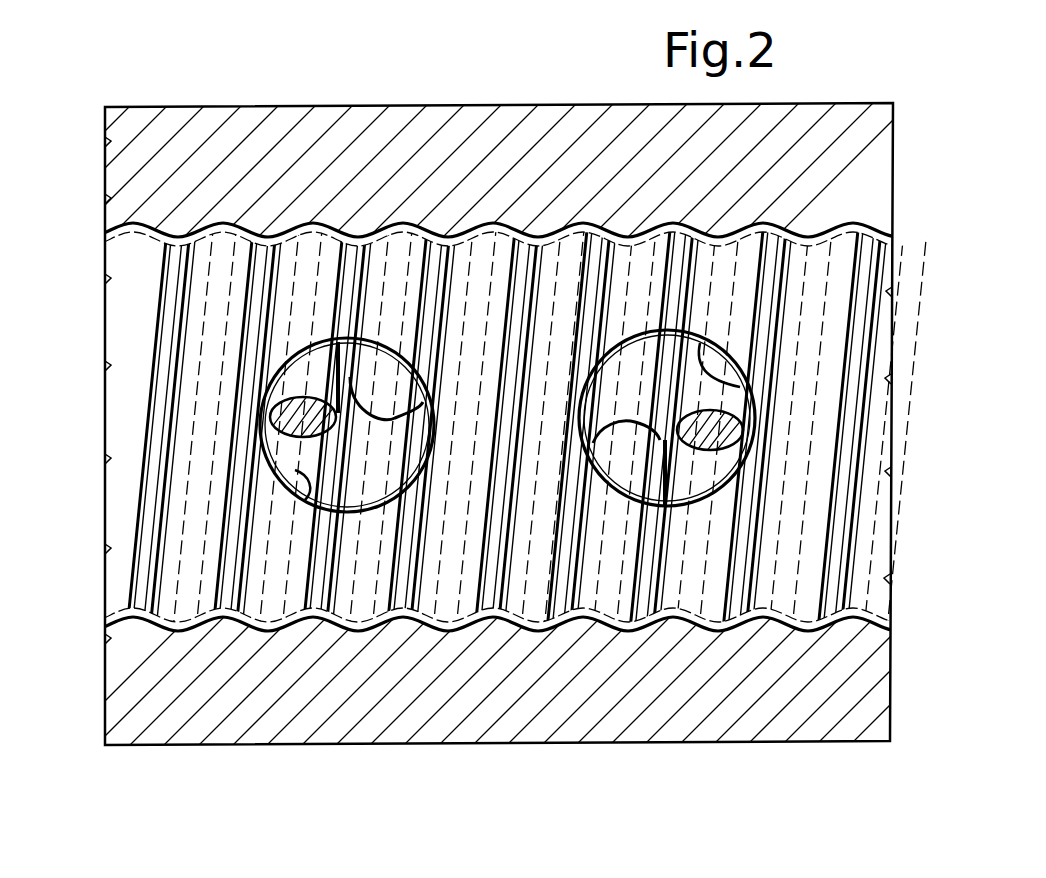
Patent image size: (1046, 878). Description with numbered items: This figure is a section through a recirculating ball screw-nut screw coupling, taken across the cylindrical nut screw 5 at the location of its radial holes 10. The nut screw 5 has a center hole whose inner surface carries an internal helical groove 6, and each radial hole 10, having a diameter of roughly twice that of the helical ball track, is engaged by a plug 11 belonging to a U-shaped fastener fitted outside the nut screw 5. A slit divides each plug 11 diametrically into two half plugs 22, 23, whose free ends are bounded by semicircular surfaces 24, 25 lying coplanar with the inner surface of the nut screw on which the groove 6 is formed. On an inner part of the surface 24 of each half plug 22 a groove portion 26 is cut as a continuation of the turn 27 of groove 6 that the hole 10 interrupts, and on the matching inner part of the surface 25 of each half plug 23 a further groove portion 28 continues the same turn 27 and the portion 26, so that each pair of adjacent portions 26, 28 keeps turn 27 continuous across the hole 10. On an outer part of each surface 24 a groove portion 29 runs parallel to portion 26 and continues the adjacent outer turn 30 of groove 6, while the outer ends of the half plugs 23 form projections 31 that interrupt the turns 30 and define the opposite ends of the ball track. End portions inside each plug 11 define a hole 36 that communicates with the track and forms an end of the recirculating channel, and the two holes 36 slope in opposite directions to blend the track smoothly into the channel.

The nut screw 5 is at (773, 693).
The internal helical groove 6 is at (817, 237).
The radial hole 10 is at (720, 392).
The plug 11 is at (770, 402).
The half plug 22 is at (381, 333).
The half plug 23 is at (643, 322).
The semicircular surface 24 is at (340, 337).
The semicircular surface 25 is at (757, 406).
The groove portion 26 is at (418, 365).
The turn 27 is at (367, 298).
The groove portion 28 is at (622, 385).
The groove portion 29 is at (733, 440).
The turn 30 is at (275, 287).
The projection 31 is at (740, 440).
The hole 36 is at (690, 490).